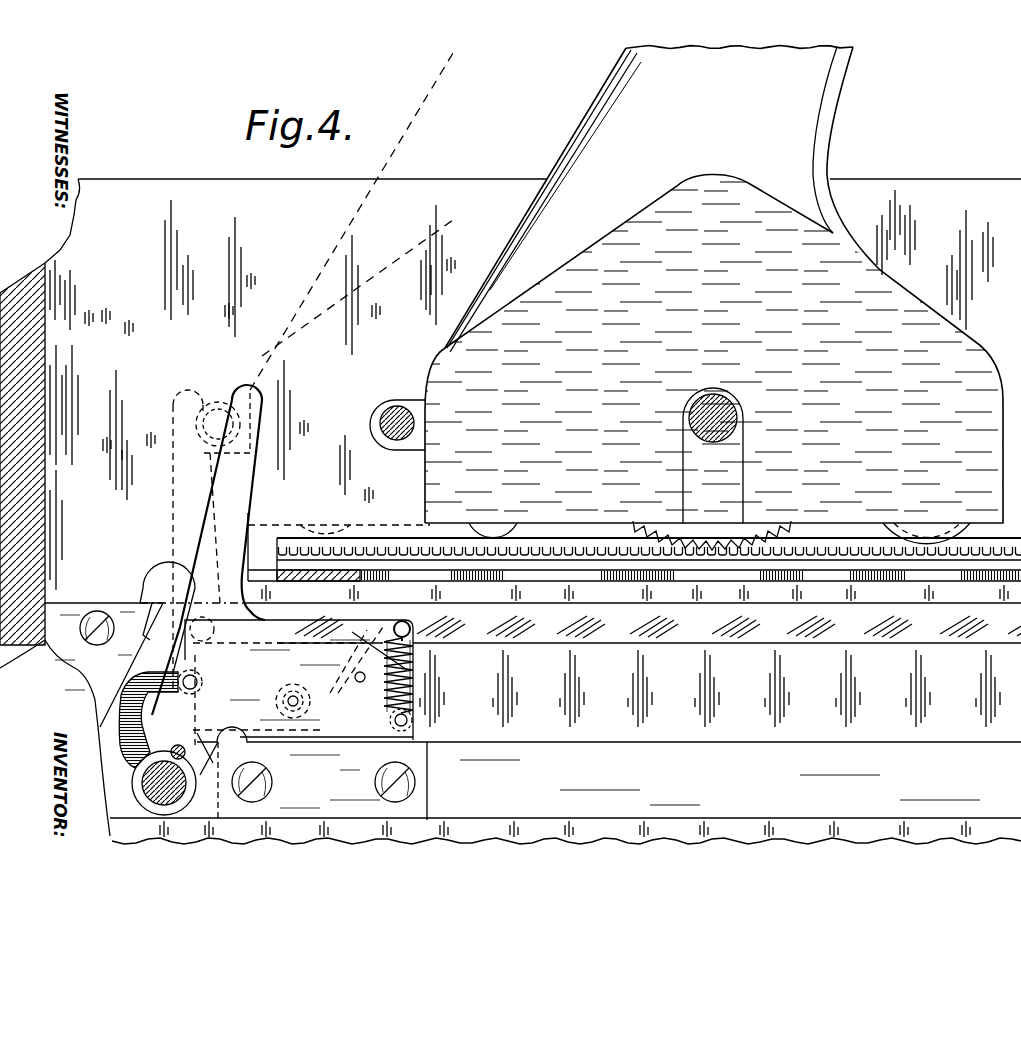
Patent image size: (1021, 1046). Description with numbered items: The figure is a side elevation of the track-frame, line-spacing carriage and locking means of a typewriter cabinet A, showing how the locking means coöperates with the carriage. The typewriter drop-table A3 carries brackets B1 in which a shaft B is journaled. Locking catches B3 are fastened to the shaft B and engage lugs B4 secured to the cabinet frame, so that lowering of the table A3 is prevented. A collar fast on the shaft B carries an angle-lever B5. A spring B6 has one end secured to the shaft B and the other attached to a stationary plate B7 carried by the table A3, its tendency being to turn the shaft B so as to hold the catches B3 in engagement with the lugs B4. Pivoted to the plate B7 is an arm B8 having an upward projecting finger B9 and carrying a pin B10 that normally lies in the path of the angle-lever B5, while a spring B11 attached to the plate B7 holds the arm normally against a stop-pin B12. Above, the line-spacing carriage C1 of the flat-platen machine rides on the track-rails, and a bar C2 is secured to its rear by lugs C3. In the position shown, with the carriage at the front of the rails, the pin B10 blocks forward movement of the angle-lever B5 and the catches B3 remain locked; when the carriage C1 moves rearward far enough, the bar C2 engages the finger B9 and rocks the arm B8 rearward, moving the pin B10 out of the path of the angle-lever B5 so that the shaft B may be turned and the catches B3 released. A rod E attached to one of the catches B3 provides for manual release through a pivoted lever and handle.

The cabinet A is at (30, 377).
The typewriter drop-table A3 is at (565, 793).
The shaft B is at (185, 745).
The brackets B1 is at (312, 773).
The locking catches B3 is at (160, 573).
The lugs B4 is at (117, 613).
The angle-lever B5 is at (172, 675).
The spring B6 is at (187, 782).
The stationary plate B7 is at (299, 690).
The arm B8 is at (319, 620).
The finger B9 is at (188, 411).
The pin B10 is at (195, 678).
The spring B11 is at (416, 646).
The stop-pin B12 is at (360, 682).
The line-spacing carriage C1 is at (715, 298).
The bar C2 is at (390, 407).
The lugs C3 is at (390, 443).
The rod E is at (837, 628).